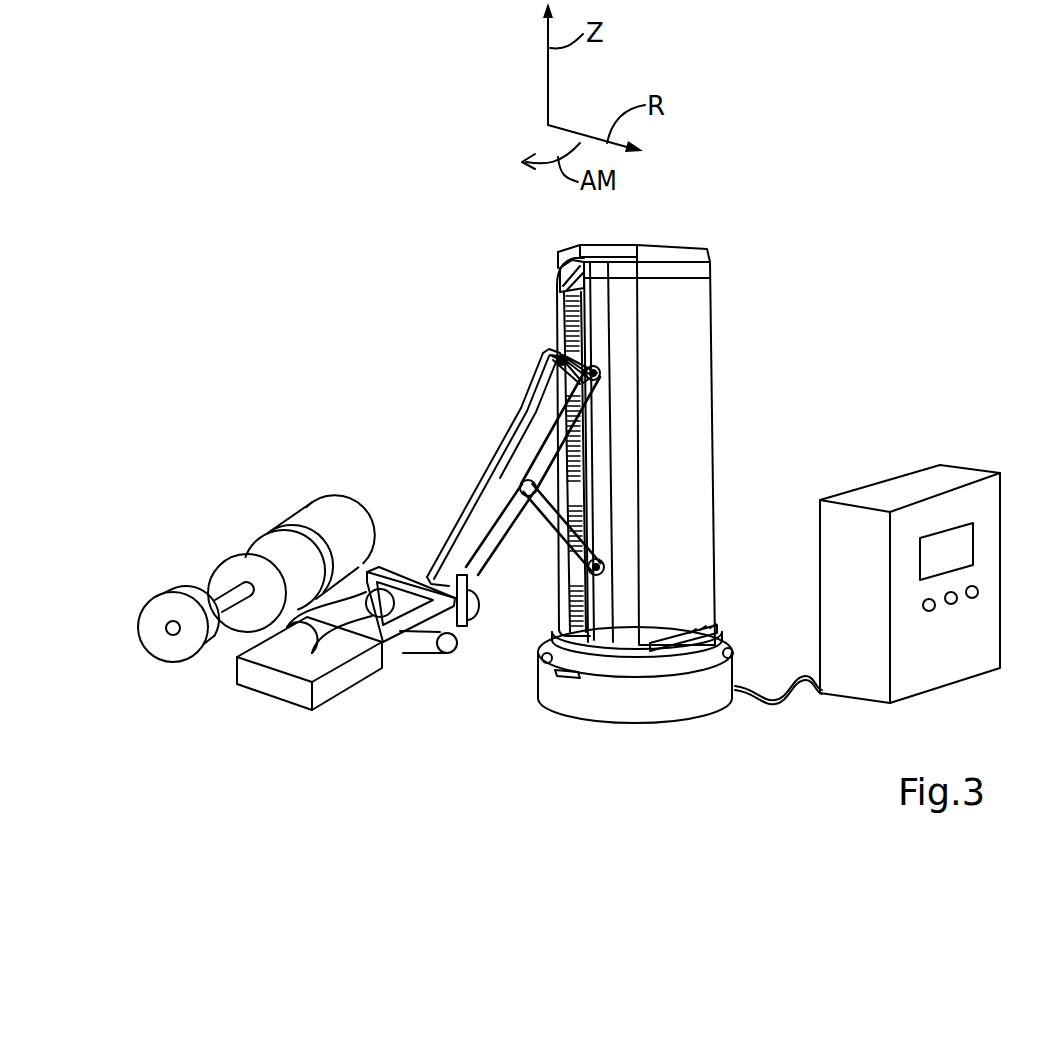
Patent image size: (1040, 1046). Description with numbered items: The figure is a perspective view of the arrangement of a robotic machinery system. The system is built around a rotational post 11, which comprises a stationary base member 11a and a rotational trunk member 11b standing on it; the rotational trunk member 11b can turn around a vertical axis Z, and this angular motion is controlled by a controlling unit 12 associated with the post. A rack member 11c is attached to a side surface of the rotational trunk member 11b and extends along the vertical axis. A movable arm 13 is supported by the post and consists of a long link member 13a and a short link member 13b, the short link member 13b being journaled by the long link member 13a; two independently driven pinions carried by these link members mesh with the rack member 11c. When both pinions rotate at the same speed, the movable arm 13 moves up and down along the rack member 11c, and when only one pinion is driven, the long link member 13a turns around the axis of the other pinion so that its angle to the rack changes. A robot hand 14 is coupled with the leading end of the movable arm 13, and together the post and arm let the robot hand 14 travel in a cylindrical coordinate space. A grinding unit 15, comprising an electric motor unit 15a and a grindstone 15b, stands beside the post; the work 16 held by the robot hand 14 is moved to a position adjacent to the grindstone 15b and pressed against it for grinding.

The rotational post 11 is at (675, 727).
The stationary base member 11a is at (603, 706).
The rotational trunk member 11b is at (706, 355).
The rack member 11c is at (560, 303).
The controlling unit 12 is at (925, 482).
The movable arm 13 is at (514, 403).
The long link member 13a is at (468, 500).
The short link member 13b is at (540, 540).
The robot hand 14 is at (443, 677).
The grinding unit 15 is at (281, 492).
The electric motor unit 15a is at (335, 512).
The grindstone 15b is at (152, 610).
The work 16 is at (329, 630).